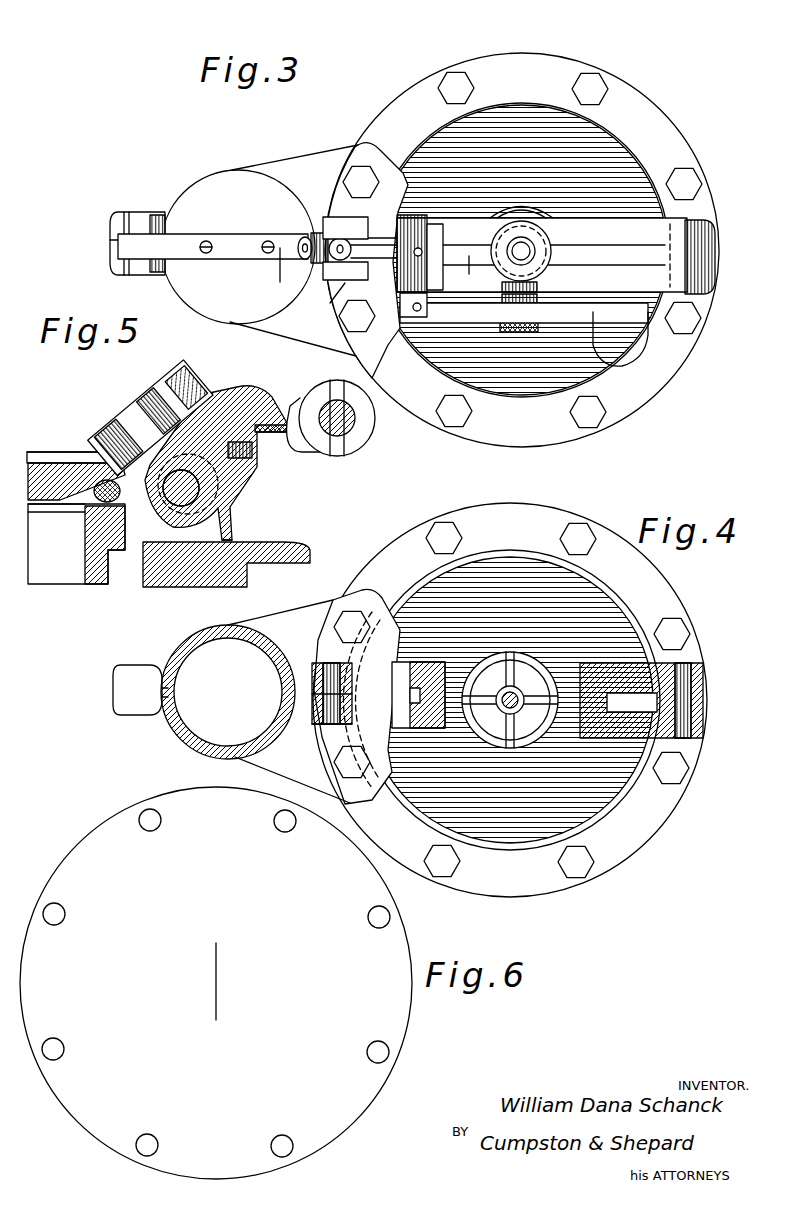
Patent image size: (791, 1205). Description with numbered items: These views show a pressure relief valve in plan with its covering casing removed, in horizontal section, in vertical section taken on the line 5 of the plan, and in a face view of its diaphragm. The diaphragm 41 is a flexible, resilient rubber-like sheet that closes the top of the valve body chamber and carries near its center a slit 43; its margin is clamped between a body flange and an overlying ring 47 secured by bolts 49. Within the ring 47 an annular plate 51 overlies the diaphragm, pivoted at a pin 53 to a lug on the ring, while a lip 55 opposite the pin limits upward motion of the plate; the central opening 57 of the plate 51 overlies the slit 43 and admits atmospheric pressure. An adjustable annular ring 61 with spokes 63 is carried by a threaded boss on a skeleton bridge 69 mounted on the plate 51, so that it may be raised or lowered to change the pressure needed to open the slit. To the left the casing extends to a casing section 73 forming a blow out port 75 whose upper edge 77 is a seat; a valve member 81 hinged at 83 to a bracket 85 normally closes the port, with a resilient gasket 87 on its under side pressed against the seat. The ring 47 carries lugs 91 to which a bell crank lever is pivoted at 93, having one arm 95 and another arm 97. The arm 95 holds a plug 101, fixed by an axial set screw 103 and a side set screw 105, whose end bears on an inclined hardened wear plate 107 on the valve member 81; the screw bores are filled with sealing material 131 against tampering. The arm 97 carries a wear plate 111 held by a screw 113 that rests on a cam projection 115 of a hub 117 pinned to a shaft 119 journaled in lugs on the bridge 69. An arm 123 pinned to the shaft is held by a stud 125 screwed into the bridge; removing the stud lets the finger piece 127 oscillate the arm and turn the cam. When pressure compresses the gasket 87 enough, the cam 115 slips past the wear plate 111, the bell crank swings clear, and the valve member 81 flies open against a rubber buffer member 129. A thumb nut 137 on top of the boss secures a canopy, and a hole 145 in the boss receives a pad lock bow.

In FIG. 3, the section line 5 is at (382, 266).
In FIG. 4, the diaphragm 41 is at (555, 728).
In FIG. 6, the diaphragm 41 is at (404, 1032).
In FIG. 4, the slit 43 is at (498, 742).
In FIG. 6, the slit 43 is at (217, 982).
In FIG. 3, the ring 47 is at (536, 56).
In FIG. 5, the ring 47 is at (150, 586).
In FIG. 4, the ring 47 is at (682, 612).
In FIG. 3, the bolts 49 is at (700, 320).
In FIG. 4, the bolts 49 is at (560, 537).
In FIG. 3, the plate 51 is at (618, 150).
In FIG. 4, the plate 51 is at (606, 598).
In FIG. 3, the pin 53 is at (702, 222).
In FIG. 4, the pin 53 is at (705, 676).
In FIG. 3, the lip 55 is at (398, 336).
In FIG. 4, the lip 55 is at (340, 560).
In FIG. 3, the opening 57 is at (545, 214).
In FIG. 4, the opening 57 is at (522, 654).
In FIG. 3, the annular ring 61 is at (560, 215).
In FIG. 4, the annular ring 61 is at (542, 670).
In FIG. 4, the spokes 63 is at (536, 735).
In FIG. 3, the bridge 69 is at (620, 218).
In FIG. 4, the bridge 69 is at (426, 732).
In FIG. 5, the casing section 73 is at (85, 560).
In FIG. 4, the casing section 73 is at (178, 688).
In FIG. 5, the blow out port 75 is at (56, 528).
In FIG. 5, the upper edge 77 is at (56, 524).
In FIG. 3, the valve member 81 is at (238, 247).
In FIG. 5, the valve member 81 is at (35, 452).
In FIG. 3, the hinge 83 is at (136, 212).
In FIG. 3, the bracket 85 is at (112, 240).
In FIG. 5, the gasket 87 is at (60, 500).
In FIG. 3, the lugs 91 is at (340, 281).
In FIG. 5, the lugs 91 is at (226, 530).
In FIG. 4, the lugs 91 is at (308, 665).
In FIG. 3, the pivot 93 is at (325, 302).
In FIG. 5, the pivot 93 is at (200, 492).
In FIG. 4, the pivot 93 is at (330, 727).
In FIG. 3, the arm 95 is at (320, 230).
In FIG. 5, the arm 95 is at (146, 396).
In FIG. 3, the arm 97 is at (380, 272).
In FIG. 5, the arm 97 is at (266, 393).
In FIG. 4, the arm 97 is at (312, 712).
In FIG. 5, the plug 101 is at (100, 436).
In FIG. 5, the set screw 103 is at (166, 392).
In FIG. 5, the set screw 105 is at (128, 400).
In FIG. 3, the wear plate 107 is at (248, 236).
In FIG. 5, the wear plate 107 is at (95, 456).
In FIG. 5, the wear plate 111 is at (288, 433).
In FIG. 5, the screw 113 is at (245, 460).
In FIG. 3, the cam projection 115 is at (397, 226).
In FIG. 5, the cam projection 115 is at (325, 462).
In FIG. 3, the hub 117 is at (425, 244).
In FIG. 5, the hub 117 is at (356, 428).
In FIG. 3, the shaft 119 is at (418, 214).
In FIG. 5, the shaft 119 is at (345, 440).
In FIG. 3, the arm 123 is at (466, 319).
In FIG. 3, the stud 125 is at (520, 333).
In FIG. 3, the finger piece 127 is at (610, 345).
In FIG. 4, the buffer member 129 is at (135, 716).
In FIG. 5, the sealing material 131 is at (205, 393).
In FIG. 3, the thumb nut 137 is at (550, 240).
In FIG. 3, the hole 145 is at (535, 258).